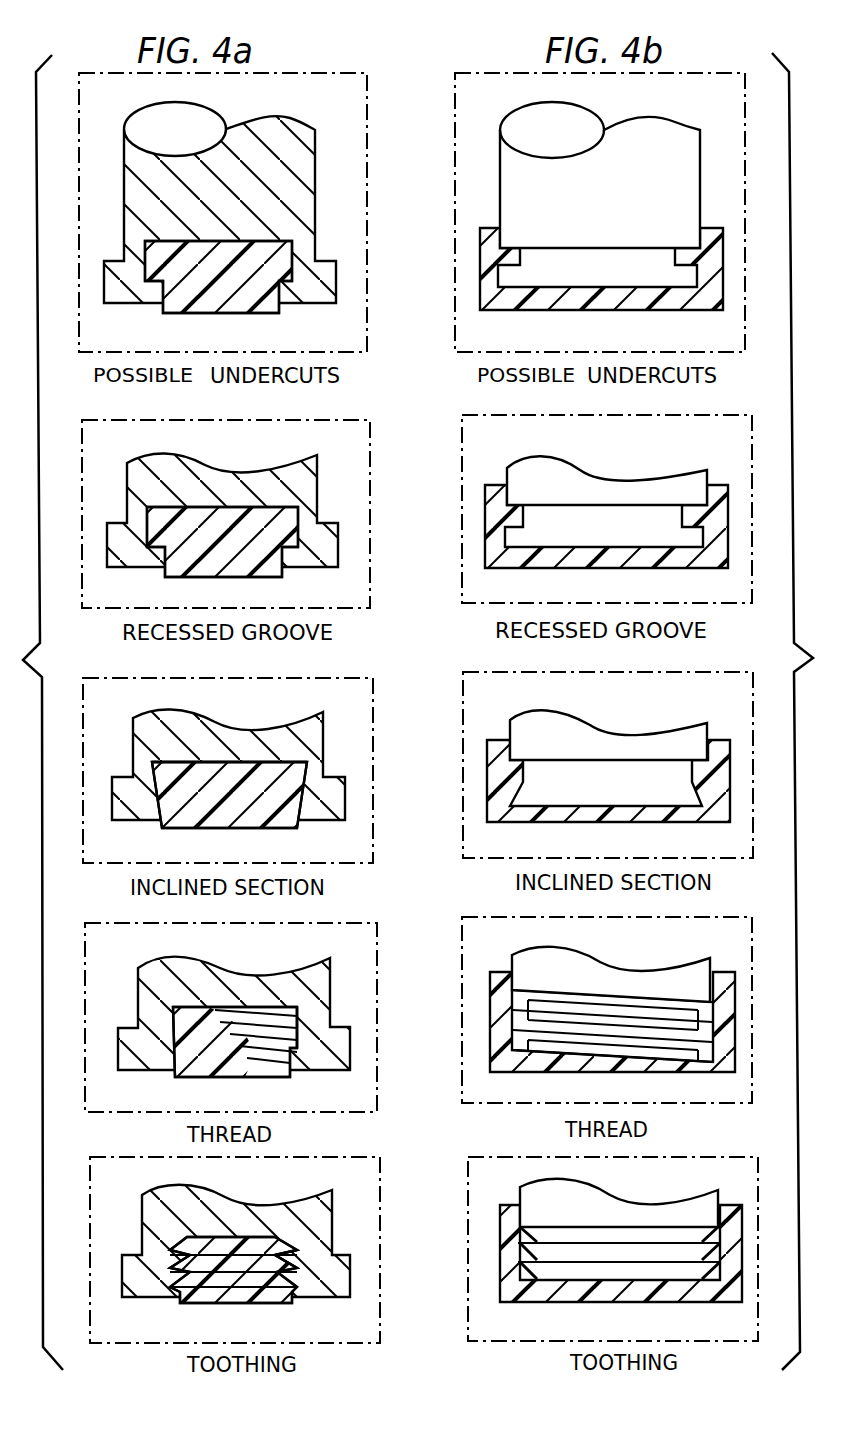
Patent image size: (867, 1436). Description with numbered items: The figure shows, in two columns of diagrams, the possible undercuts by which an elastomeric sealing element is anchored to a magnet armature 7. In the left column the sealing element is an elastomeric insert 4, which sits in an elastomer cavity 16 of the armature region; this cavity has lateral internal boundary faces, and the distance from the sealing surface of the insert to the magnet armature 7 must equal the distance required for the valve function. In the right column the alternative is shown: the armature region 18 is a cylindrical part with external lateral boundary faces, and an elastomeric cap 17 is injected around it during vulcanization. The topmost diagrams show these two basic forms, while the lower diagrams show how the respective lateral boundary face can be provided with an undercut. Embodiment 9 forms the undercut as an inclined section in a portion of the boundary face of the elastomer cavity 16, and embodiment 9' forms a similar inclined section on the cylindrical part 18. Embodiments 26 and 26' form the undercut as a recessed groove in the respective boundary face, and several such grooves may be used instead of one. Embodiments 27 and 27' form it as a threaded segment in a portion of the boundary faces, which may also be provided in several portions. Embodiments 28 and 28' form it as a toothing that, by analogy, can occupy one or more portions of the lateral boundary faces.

In FIG. 4a, the elastomeric insert 4 is at (265, 310).
In FIG. 4a, the magnet armature 7 is at (133, 177).
In FIG. 4b, the magnet armature 7 is at (663, 162).
In FIG. 4a, the inclined section undercut 9 is at (278, 722).
In FIG. 4b, the inclined section undercut 9' is at (585, 779).
In FIG. 4a, the elastomer cavity 16 is at (225, 215).
In FIG. 4b, the elastomeric cap 17 is at (647, 297).
In FIG. 4b, the armature region 18 is at (605, 220).
In FIG. 4a, the recessed groove undercut 26 is at (277, 514).
In FIG. 4b, the recessed groove undercut 26' is at (582, 522).
In FIG. 4a, the threaded segment undercut 27 is at (357, 989).
In FIG. 4b, the threaded segment undercut 27' is at (583, 1022).
In FIG. 4a, the toothing undercut 28 is at (345, 1240).
In FIG. 4b, the toothing undercut 28' is at (588, 1232).